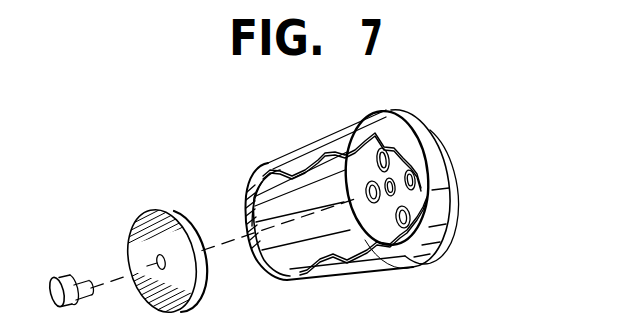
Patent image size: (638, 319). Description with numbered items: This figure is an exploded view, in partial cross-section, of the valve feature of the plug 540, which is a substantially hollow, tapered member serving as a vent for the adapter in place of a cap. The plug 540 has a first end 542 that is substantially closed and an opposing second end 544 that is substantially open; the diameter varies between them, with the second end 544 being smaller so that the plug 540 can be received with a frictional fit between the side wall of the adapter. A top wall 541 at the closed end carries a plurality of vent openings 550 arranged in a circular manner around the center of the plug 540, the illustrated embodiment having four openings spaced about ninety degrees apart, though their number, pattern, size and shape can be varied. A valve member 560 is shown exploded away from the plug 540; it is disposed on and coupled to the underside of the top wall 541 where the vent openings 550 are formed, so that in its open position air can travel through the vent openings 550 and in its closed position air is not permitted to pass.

The plug 540 is at (444, 169).
The top wall 541 is at (347, 166).
The first end 542 is at (452, 198).
The second end 544 is at (247, 182).
The vent openings 550 is at (397, 150).
The valve member 560 is at (150, 240).